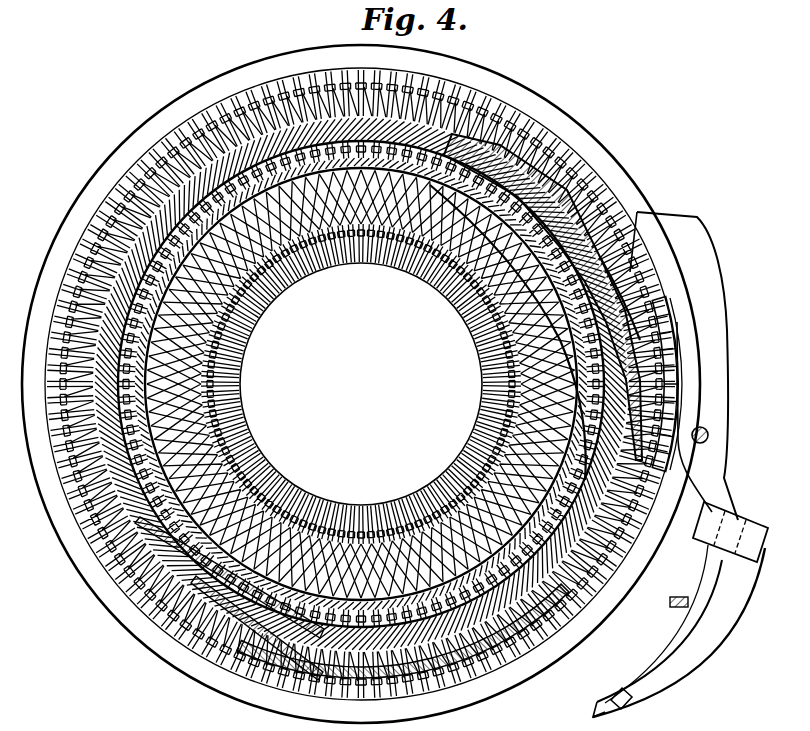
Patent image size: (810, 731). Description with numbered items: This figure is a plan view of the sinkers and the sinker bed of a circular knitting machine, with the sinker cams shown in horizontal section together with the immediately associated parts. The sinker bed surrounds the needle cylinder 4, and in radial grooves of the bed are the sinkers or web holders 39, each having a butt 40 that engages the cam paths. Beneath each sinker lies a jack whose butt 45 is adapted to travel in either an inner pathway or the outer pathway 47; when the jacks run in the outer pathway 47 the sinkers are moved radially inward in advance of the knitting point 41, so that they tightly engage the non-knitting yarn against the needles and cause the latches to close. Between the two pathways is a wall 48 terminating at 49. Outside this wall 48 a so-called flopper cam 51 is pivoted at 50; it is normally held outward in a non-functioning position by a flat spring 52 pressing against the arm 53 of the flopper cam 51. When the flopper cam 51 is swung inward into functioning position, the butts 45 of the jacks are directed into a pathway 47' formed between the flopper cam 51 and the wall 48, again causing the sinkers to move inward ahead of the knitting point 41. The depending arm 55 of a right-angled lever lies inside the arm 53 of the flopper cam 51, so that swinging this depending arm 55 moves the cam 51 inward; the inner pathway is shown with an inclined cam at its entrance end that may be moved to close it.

The needle cylinder 4 is at (238, 412).
The sinkers or web holders 39 is at (237, 370).
The butts 40 is at (175, 588).
The knitting point 41 is at (565, 258).
The butt 45 is at (185, 143).
The outer pathway 47 is at (403, 653).
The pathway 47' is at (722, 384).
The wall 48 is at (647, 303).
The termination of the wall 49 is at (627, 280).
The pivot 50 is at (712, 437).
The flopper cam 51 is at (712, 346).
The flat spring 52 is at (713, 620).
The arm 53 is at (608, 703).
The depending arm 55 is at (679, 597).